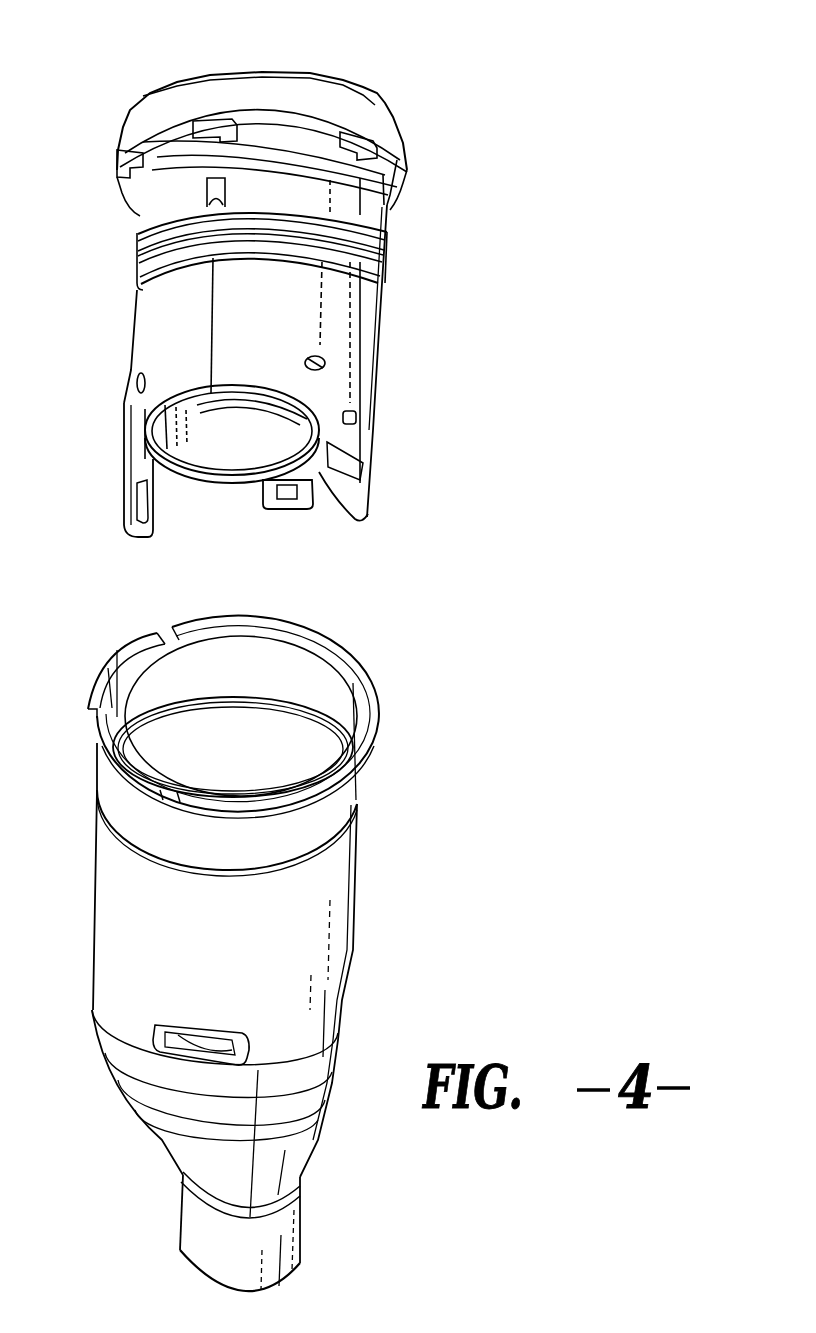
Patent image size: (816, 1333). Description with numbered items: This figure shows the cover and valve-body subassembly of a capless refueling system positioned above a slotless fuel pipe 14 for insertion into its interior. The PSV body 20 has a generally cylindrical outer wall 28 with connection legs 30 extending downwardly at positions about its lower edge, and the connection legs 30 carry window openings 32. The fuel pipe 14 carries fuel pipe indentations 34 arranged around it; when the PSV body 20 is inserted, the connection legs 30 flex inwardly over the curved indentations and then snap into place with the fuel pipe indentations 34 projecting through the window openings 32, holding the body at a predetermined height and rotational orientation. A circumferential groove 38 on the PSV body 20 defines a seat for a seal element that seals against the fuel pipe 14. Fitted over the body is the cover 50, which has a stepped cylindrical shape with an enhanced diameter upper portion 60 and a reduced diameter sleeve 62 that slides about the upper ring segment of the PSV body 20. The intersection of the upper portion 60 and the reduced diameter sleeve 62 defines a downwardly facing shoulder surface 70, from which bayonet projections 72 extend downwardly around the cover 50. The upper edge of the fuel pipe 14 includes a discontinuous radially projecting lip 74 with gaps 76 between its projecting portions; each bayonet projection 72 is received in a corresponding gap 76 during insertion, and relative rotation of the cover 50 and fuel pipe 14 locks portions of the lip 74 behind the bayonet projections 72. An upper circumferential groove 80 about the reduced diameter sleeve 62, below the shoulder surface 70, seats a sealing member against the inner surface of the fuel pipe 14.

The fuel pipe 14 is at (350, 933).
The PSV body 20 is at (383, 379).
The cylindrical outer wall 28 is at (133, 326).
The connection legs 30 is at (140, 537).
The window openings 32 is at (150, 498).
The fuel pipe indentations 34 is at (183, 1047).
The circumferential groove 38 is at (143, 287).
The cover 50 is at (386, 100).
The upper portion 60 is at (257, 70).
The reduced diameter sleeve 62 is at (390, 245).
The shoulder surface 70 is at (400, 172).
The bayonet projections 72 is at (190, 139).
The radially projecting lip 74 is at (380, 716).
The gaps 76 is at (150, 640).
The upper circumferential groove 80 is at (160, 175).